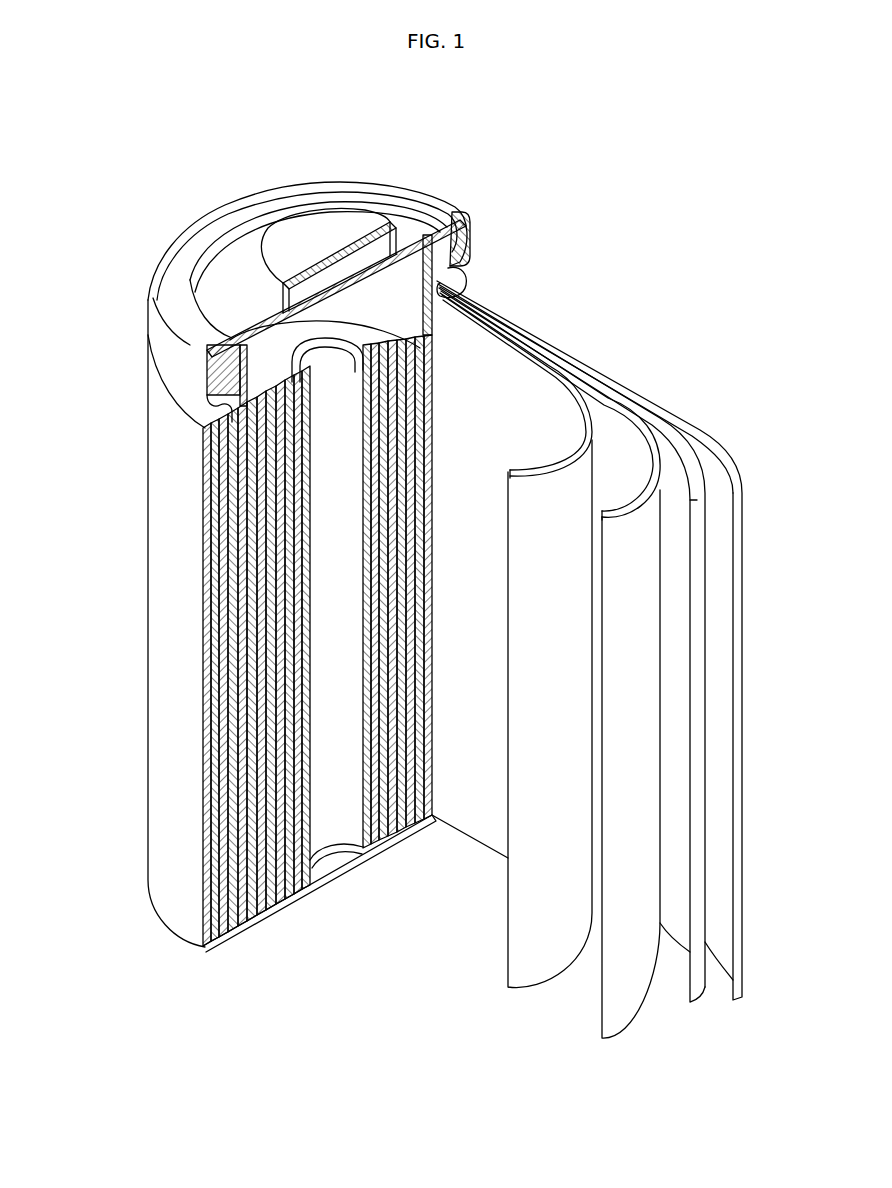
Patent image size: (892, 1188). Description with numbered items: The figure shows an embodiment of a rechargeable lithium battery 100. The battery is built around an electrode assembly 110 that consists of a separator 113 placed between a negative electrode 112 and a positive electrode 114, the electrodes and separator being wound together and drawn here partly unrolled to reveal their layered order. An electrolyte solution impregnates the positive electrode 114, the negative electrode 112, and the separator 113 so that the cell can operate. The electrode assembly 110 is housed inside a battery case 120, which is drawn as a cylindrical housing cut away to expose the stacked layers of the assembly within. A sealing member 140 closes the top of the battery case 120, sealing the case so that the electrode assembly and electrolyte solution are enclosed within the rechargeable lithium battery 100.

The rechargeable lithium battery 100 is at (527, 164).
The electrode assembly 110 is at (317, 640).
The negative electrode 112 is at (737, 473).
The separator 113 is at (545, 362).
The positive electrode 114 is at (627, 427).
The battery case 120 is at (162, 567).
The sealing member 140 is at (277, 240).